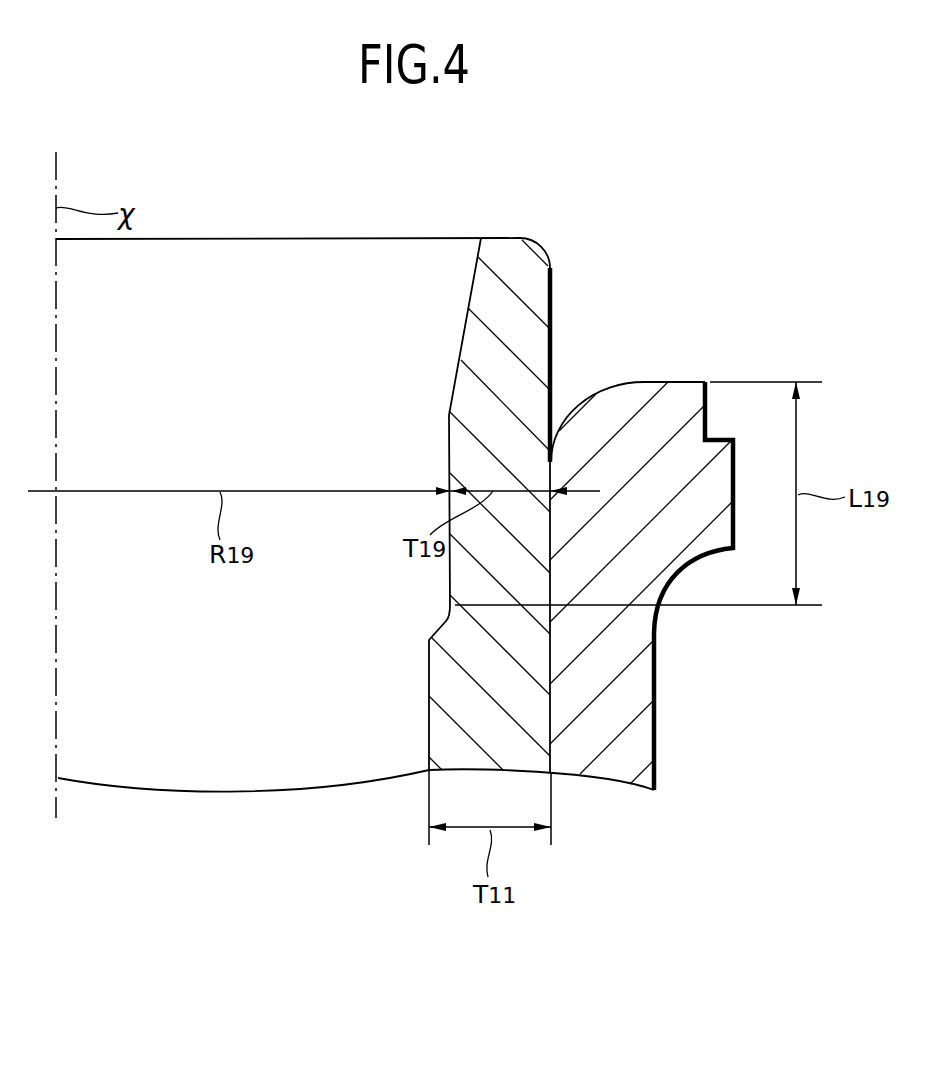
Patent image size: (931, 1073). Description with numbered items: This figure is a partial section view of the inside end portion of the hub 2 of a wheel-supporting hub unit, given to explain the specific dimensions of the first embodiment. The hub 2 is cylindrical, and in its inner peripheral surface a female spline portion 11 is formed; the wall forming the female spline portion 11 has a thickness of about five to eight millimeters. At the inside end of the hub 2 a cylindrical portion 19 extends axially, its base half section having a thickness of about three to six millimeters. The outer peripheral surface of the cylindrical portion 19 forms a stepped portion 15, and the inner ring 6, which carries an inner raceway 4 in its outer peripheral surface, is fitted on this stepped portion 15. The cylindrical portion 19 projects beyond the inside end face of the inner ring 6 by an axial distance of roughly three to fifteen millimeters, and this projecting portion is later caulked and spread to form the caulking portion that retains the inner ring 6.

The hub 2 is at (495, 737).
The inner raceway 4 is at (677, 582).
The inner ring 6 is at (637, 754).
The female spline portion 11 is at (428, 690).
The stepped portion 15 is at (550, 708).
The cylindrical portion 19 is at (462, 583).